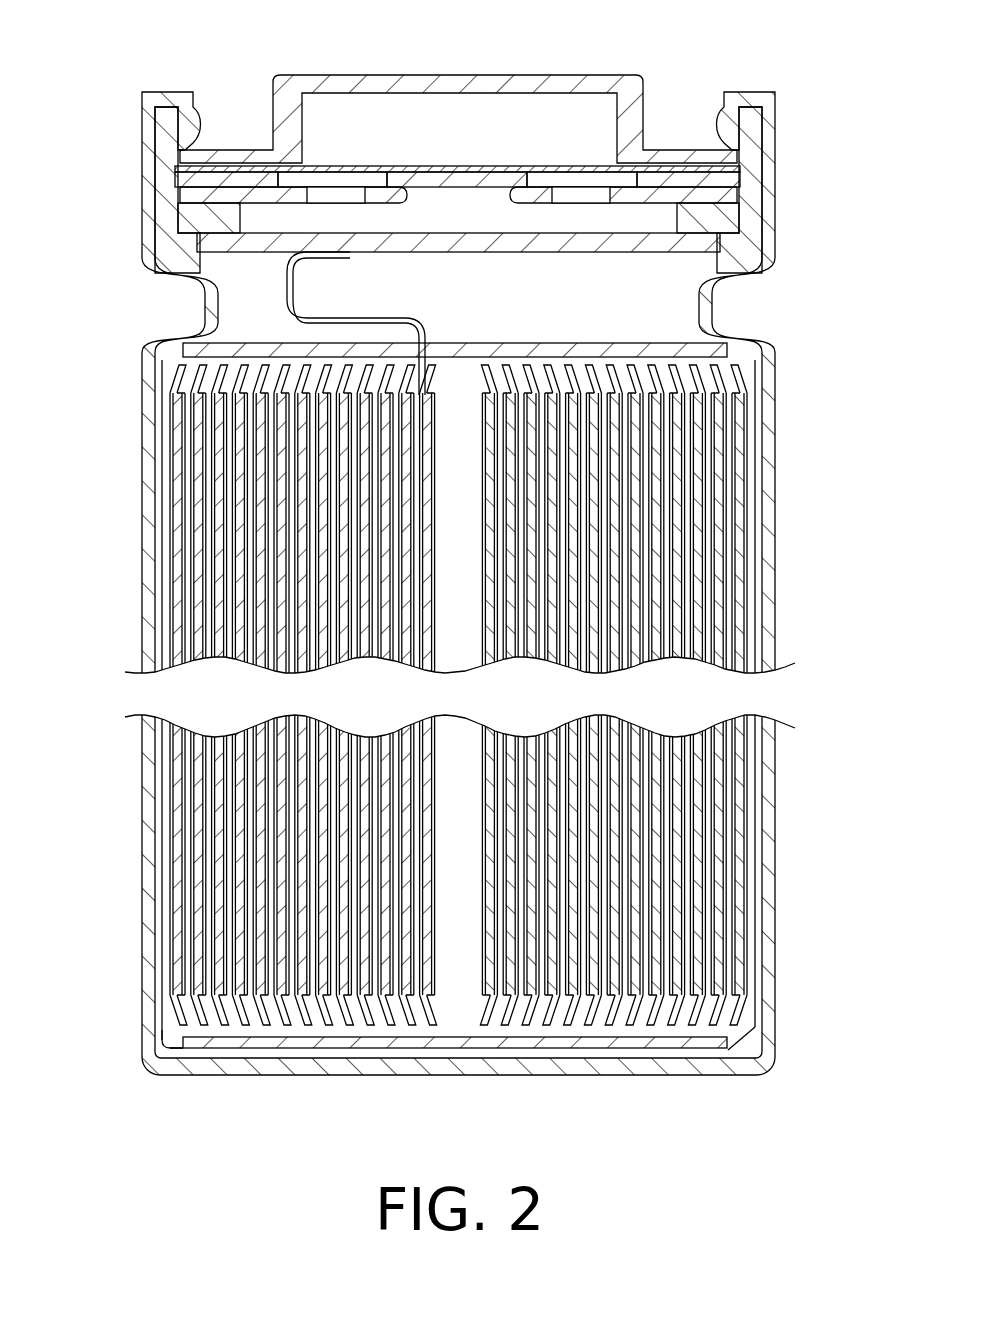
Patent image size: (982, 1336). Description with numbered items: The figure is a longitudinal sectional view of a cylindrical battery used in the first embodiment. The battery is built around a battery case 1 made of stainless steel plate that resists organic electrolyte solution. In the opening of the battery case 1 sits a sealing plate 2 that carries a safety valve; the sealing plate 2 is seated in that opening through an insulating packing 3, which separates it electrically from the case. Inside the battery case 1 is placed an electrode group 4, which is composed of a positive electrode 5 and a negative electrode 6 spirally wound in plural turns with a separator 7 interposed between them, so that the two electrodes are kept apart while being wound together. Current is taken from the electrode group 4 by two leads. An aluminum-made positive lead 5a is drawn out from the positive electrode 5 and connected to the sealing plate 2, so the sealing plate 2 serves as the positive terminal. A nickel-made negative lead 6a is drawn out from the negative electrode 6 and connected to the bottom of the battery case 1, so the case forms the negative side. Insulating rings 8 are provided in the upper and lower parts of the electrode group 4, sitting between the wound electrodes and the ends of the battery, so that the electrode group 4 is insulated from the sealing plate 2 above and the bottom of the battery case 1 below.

The battery case 1 is at (158, 346).
The sealing plate 2 is at (432, 78).
The insulating packing 3 is at (752, 180).
The electrode group 4 is at (270, 522).
The positive electrode 5 is at (700, 547).
The positive lead 5a is at (287, 296).
The negative electrode 6 is at (175, 885).
The negative lead 6a is at (742, 1012).
The separator 7 is at (175, 1013).
The insulating rings 8 is at (717, 342).